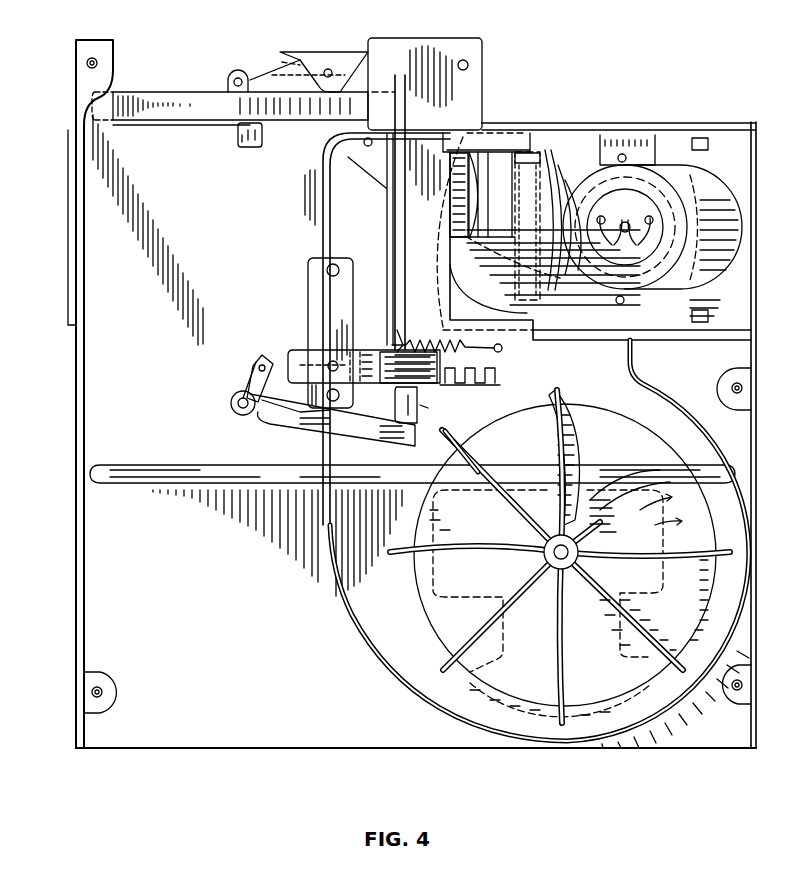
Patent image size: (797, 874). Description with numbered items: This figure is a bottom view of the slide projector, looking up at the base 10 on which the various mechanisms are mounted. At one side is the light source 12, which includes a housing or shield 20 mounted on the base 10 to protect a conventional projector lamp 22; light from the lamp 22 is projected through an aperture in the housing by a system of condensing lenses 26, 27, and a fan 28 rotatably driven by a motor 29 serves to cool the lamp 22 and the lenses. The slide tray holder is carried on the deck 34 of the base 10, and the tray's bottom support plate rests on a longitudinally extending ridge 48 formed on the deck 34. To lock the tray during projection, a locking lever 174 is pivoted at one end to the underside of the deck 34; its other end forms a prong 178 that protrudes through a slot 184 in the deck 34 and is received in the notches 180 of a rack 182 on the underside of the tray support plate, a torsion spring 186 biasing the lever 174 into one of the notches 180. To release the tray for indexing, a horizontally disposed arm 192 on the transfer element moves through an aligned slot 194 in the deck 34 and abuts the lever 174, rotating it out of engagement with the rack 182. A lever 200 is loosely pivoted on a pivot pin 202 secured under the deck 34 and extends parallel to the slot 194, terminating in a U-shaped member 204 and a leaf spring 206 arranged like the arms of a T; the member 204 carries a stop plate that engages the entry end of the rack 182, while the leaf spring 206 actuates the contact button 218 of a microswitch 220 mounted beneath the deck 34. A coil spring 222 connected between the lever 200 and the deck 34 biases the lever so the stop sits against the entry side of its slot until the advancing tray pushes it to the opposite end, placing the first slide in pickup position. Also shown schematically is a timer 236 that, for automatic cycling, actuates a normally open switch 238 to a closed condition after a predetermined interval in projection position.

The base 10 is at (59, 371).
The light source 12 is at (642, 87).
The housing or shield 20 is at (710, 117).
The projector lamp 22 is at (680, 214).
The condensing lens 26 is at (483, 205).
The condensing lens 27 is at (553, 178).
The fan 28 is at (565, 442).
The motor 29 is at (620, 505).
The deck 34 is at (117, 522).
The longitudinally extending ridge 48 is at (167, 472).
The locking lever 174 is at (303, 417).
The prong 178 is at (455, 436).
The notches 180 is at (468, 361).
The rack 182 is at (492, 377).
The slot 184 is at (423, 402).
The torsion spring 186 is at (258, 377).
The horizontally disposed arm 192 is at (398, 326).
The slot 194 is at (404, 118).
The lever 200 is at (386, 205).
The pivot pin 202 is at (363, 143).
The U-shaped member 204 is at (430, 383).
The leaf spring 206 is at (298, 353).
The contact button 218 is at (297, 357).
The microswitch 220 is at (314, 285).
The coil spring 222 is at (432, 337).
The timer 236 is at (164, 98).
The switch 238 is at (288, 62).